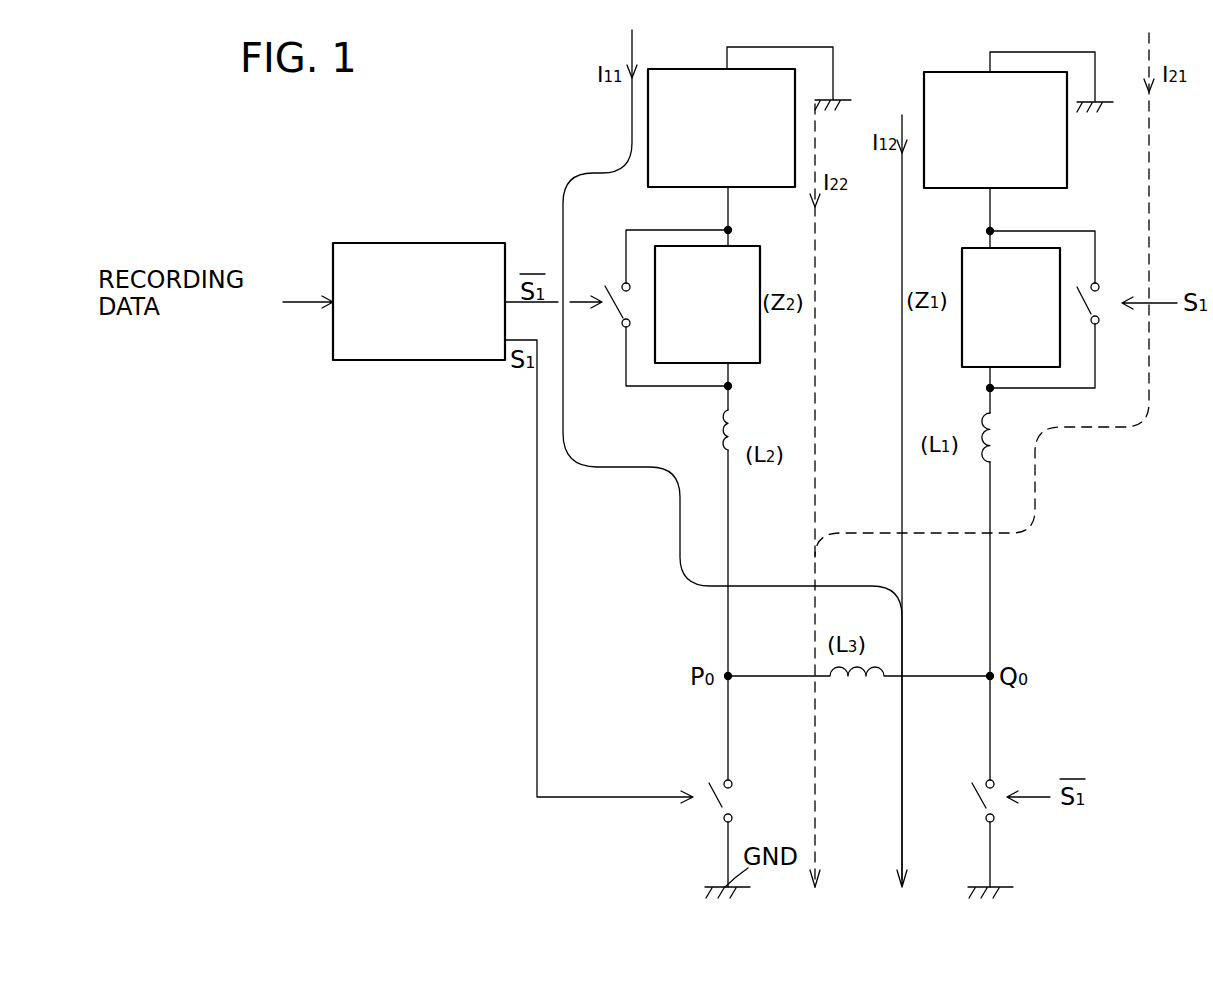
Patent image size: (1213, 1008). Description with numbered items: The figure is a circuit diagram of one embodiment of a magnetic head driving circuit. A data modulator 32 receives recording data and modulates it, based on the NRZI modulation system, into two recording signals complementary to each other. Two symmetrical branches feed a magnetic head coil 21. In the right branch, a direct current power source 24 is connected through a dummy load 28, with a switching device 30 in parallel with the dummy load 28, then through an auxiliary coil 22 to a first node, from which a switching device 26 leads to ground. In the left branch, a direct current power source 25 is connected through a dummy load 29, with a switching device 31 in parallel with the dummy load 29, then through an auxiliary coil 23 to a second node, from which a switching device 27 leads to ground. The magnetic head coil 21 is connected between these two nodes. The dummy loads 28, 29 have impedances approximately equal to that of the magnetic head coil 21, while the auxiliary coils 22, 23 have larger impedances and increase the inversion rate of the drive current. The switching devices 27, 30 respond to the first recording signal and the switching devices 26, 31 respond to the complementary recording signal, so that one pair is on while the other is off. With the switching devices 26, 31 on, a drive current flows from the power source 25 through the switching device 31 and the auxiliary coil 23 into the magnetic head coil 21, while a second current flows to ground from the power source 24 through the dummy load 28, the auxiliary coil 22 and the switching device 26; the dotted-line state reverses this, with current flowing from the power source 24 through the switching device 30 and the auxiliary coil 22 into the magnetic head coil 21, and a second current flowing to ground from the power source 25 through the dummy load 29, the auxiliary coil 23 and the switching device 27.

The magnetic head coil 21 is at (860, 682).
The auxiliary coil 22 is at (1000, 440).
The auxiliary coil 23 is at (740, 433).
The direct current power source 24 is at (957, 72).
The direct current power source 25 is at (712, 69).
The switching device 26 is at (1000, 800).
The switching device 27 is at (712, 797).
The dummy load 28 is at (955, 260).
The dummy load 29 is at (742, 246).
The switching device 30 is at (1103, 303).
The switching device 31 is at (607, 308).
The data modulator 32 is at (373, 243).